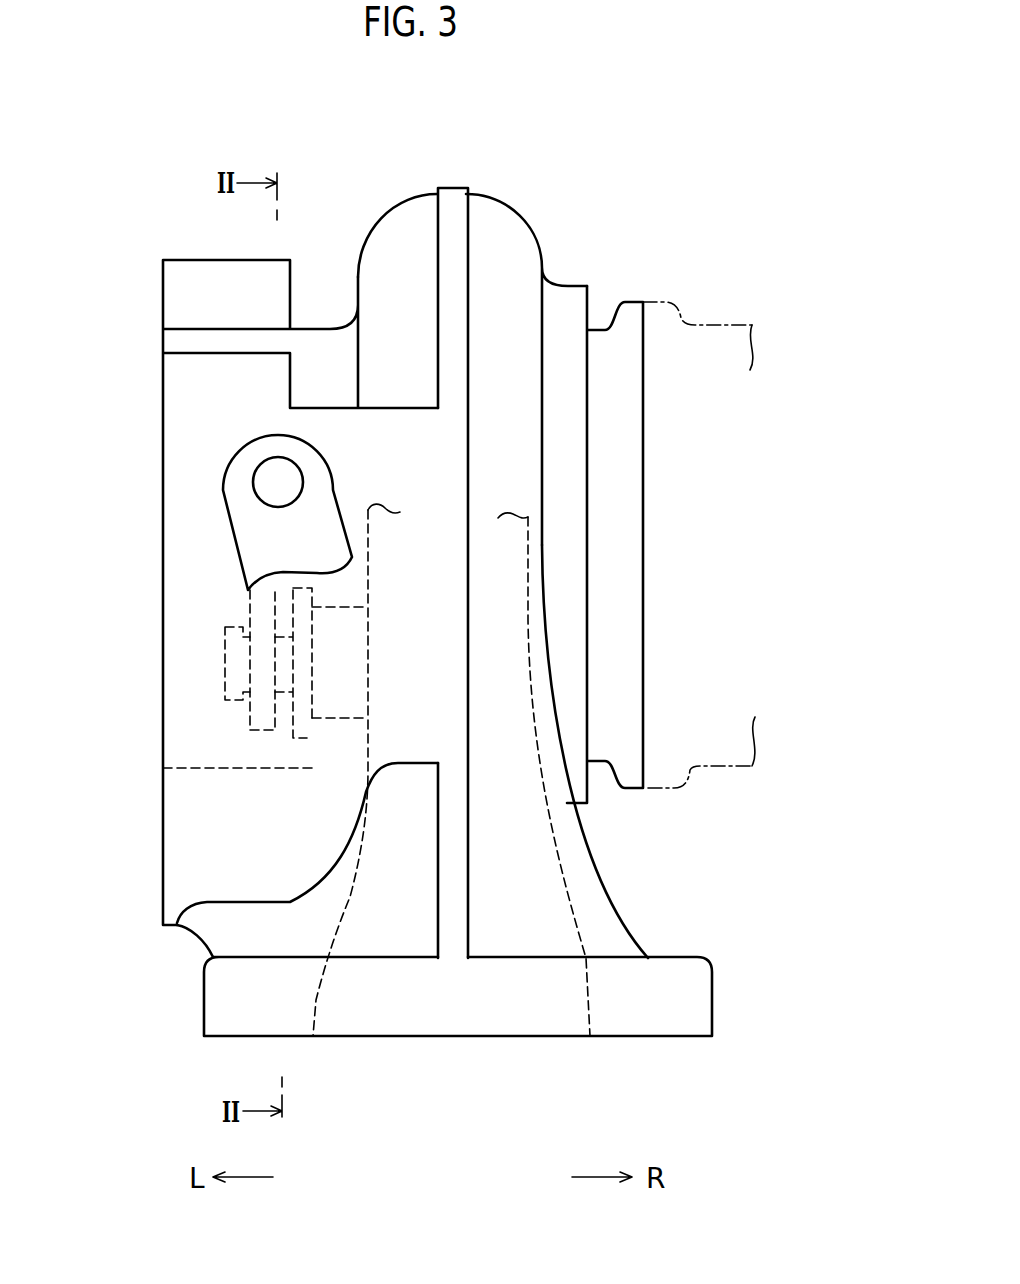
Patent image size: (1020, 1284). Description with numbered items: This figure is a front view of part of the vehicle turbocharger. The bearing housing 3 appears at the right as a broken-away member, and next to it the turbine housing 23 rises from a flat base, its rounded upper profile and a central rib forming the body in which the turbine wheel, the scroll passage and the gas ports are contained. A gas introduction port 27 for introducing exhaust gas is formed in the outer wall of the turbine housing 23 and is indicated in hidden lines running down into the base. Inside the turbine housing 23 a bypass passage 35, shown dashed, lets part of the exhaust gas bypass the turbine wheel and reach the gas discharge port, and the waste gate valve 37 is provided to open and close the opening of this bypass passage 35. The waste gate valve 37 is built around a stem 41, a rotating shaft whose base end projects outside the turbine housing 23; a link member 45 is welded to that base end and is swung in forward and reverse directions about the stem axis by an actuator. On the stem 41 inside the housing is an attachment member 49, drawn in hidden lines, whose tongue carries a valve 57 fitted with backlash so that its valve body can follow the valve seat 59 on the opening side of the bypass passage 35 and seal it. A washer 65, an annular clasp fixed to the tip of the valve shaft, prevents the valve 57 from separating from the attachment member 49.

The bearing housing 3 is at (713, 325).
The turbine housing 23 is at (501, 192).
The gas introduction port 27 is at (580, 925).
The bypass passage 35 is at (345, 718).
The waste gate valve 37 is at (212, 605).
The stem 41 is at (267, 485).
The link member 45 is at (237, 538).
The attachment member 49 is at (250, 725).
The valve 57 is at (293, 732).
The valve seat 59 is at (312, 725).
The washer 65 is at (228, 673).